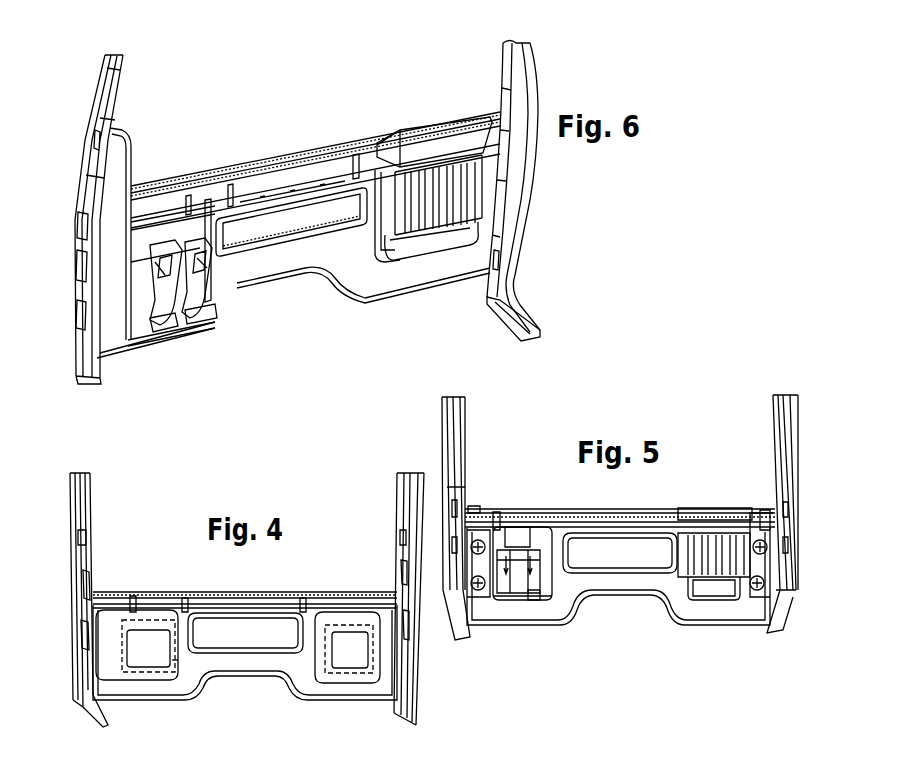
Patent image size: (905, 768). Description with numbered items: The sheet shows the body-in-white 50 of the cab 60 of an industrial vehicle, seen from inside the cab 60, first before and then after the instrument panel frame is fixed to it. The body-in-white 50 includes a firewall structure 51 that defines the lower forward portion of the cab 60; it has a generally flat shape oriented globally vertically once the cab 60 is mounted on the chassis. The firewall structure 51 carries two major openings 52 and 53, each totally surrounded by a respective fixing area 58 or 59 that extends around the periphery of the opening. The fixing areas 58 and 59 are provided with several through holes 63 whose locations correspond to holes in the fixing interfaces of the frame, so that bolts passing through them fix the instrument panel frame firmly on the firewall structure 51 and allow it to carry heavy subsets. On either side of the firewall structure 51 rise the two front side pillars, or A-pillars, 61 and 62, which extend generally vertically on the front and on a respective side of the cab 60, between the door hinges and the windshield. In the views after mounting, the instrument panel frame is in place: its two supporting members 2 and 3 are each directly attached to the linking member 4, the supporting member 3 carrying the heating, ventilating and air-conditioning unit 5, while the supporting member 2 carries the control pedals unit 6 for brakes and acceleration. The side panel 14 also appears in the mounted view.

In FIG. 6, the supporting member 2 is at (188, 328).
In FIG. 5, the supporting member 2 is at (520, 607).
In FIG. 6, the supporting member 3 is at (386, 273).
In FIG. 5, the supporting member 3 is at (688, 600).
In FIG. 6, the linking member 4 is at (302, 188).
In FIG. 5, the linking member 4 is at (641, 527).
In FIG. 6, the heating, ventilating and air-conditioning unit 5 is at (428, 138).
In FIG. 5, the heating, ventilating and air-conditioning unit 5 is at (716, 555).
In FIG. 6, the control pedals unit 6 is at (167, 332).
In FIG. 5, the control pedals unit 6 is at (534, 592).
In FIG. 5, the side panel 14 is at (580, 608).
In FIG. 6, the body-in-white 50 is at (112, 95).
In FIG. 4, the body-in-white 50 is at (402, 503).
In FIG. 5, the body-in-white 50 is at (783, 413).
In FIG. 6, the firewall structure 51 is at (218, 283).
In FIG. 4, the major opening 52 is at (152, 650).
In FIG. 4, the major opening 53 is at (343, 648).
In FIG. 4, the fixing area 58 is at (157, 623).
In FIG. 4, the fixing area 59 is at (332, 625).
In FIG. 6, the cab 60 is at (153, 42).
In FIG. 5, the cab 60 is at (682, 430).
In FIG. 6, the front side pillar 61 is at (104, 122).
In FIG. 4, the front side pillar 61 is at (88, 503).
In FIG. 5, the front side pillar 61 is at (455, 453).
In FIG. 6, the front side pillar 62 is at (502, 58).
In FIG. 4, the front side pillar 62 is at (405, 545).
In FIG. 5, the front side pillar 62 is at (775, 448).
In FIG. 4, the through holes 63 is at (175, 662).